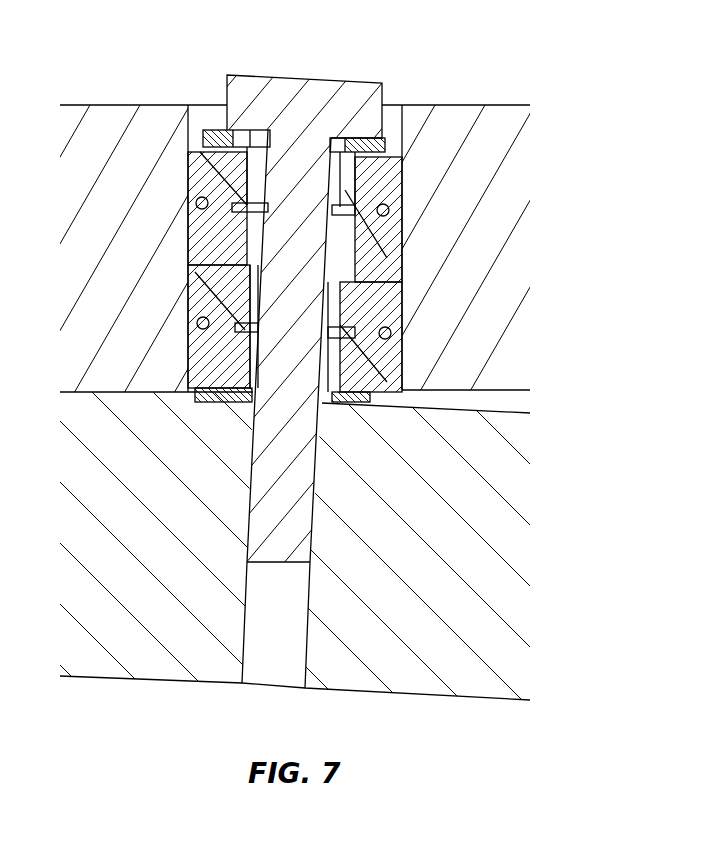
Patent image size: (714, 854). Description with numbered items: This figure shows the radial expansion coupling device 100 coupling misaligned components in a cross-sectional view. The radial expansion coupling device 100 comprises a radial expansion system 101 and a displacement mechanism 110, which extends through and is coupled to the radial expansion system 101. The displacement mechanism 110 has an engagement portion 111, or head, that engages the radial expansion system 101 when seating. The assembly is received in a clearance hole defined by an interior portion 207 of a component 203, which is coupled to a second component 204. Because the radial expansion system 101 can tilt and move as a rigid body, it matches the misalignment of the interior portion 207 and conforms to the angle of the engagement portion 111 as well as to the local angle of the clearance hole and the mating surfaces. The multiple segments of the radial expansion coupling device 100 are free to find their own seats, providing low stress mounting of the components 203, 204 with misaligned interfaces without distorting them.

The radial expansion coupling device 100 is at (408, 56).
The radial expansion system 101 is at (430, 158).
The displacement mechanism 110 is at (336, 52).
The engagement portion 111 is at (260, 74).
The component 203 is at (118, 107).
The component 204 is at (150, 678).
The interior portion 207 is at (190, 122).